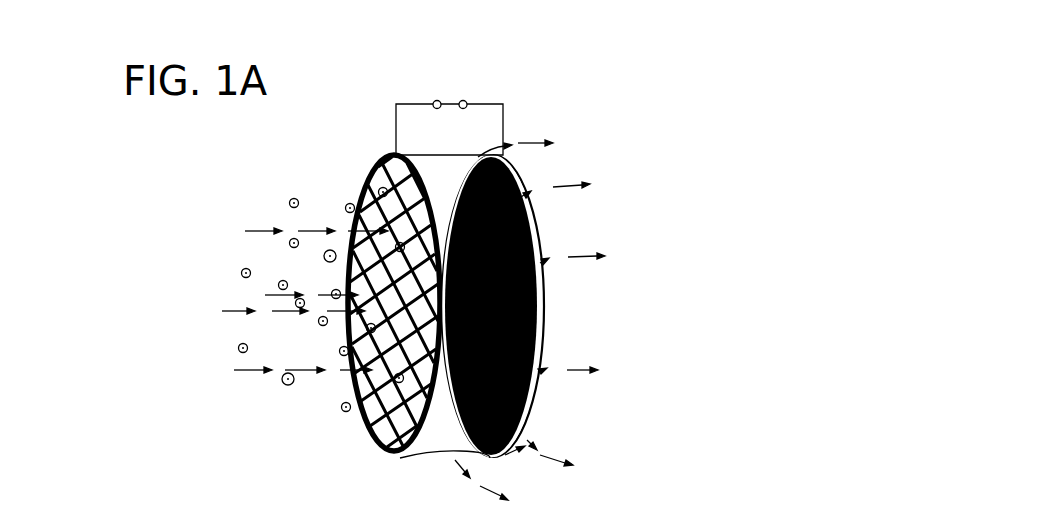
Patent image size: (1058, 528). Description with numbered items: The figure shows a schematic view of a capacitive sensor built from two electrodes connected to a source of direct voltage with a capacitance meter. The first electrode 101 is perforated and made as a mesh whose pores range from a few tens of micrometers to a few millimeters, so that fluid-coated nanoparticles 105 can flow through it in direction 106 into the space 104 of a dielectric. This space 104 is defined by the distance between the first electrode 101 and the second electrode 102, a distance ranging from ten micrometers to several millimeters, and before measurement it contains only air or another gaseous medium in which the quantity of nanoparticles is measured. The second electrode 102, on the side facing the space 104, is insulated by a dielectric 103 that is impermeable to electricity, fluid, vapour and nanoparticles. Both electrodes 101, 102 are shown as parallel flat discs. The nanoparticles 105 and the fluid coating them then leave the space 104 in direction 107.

The first electrode 101 is at (362, 418).
The second electrode 102 is at (540, 232).
The dielectric 103 is at (522, 177).
The space of a dielectric 104 is at (428, 447).
The coated nanoparticles 105 is at (283, 384).
The direction 106 is at (254, 232).
The direction 107 is at (548, 367).